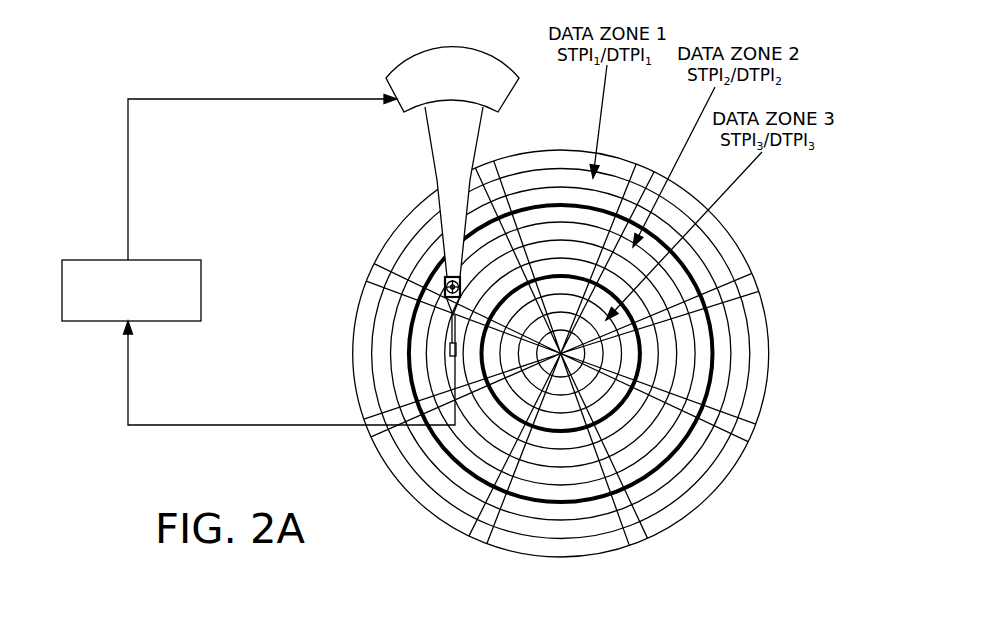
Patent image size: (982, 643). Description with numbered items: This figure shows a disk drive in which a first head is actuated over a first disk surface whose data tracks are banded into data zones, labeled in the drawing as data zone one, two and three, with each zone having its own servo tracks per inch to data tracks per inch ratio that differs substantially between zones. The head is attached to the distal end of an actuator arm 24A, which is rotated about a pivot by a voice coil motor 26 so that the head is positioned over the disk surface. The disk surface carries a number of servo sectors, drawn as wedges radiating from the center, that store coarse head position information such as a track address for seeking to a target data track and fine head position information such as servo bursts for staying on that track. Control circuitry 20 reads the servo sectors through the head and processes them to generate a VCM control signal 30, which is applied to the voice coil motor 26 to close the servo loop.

The control circuitry 20 is at (168, 260).
The actuator arm 24A is at (437, 181).
The voice coil motor 26 is at (402, 110).
The VCM control signal 30 is at (128, 167).